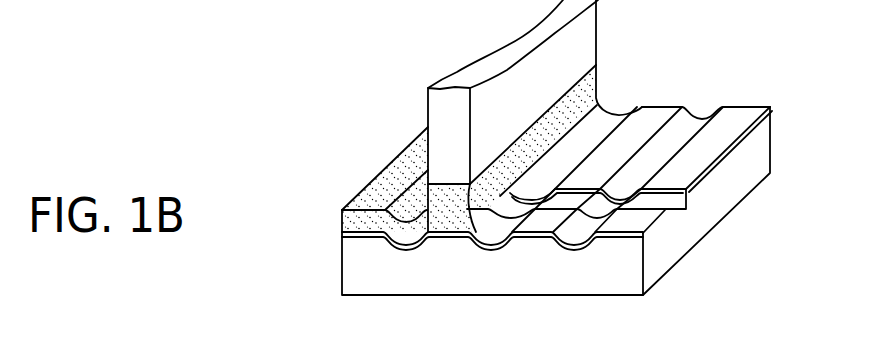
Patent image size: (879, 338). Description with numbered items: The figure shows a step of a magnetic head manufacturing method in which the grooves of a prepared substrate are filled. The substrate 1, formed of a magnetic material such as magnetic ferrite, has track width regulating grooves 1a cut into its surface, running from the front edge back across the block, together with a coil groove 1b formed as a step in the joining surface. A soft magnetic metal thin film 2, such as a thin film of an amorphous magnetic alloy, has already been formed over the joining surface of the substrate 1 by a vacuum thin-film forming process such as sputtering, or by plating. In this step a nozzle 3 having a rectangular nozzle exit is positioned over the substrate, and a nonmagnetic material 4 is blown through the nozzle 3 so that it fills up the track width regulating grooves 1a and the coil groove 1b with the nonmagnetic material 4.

The substrate 1 is at (760, 149).
The track width regulating grooves 1a is at (495, 236).
The coil groove 1b is at (690, 197).
The soft magnetic metal thin film 2 is at (743, 108).
The nozzle 3 is at (582, 44).
The nonmagnetic material 4 is at (378, 190).